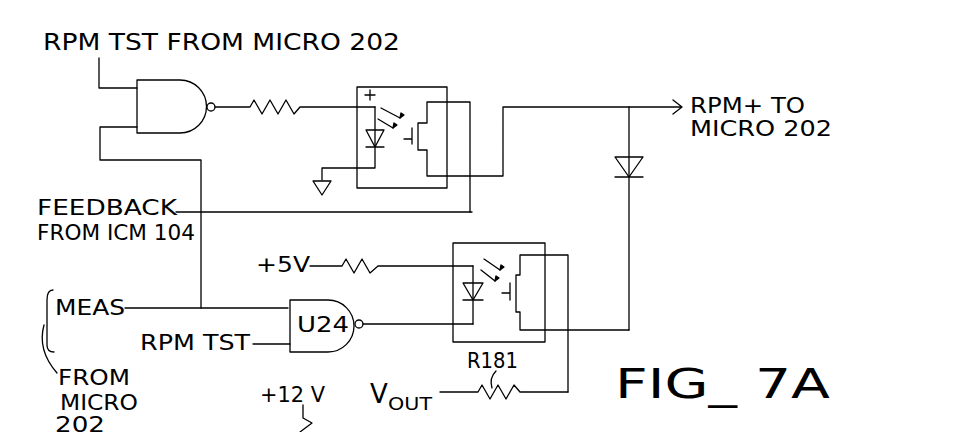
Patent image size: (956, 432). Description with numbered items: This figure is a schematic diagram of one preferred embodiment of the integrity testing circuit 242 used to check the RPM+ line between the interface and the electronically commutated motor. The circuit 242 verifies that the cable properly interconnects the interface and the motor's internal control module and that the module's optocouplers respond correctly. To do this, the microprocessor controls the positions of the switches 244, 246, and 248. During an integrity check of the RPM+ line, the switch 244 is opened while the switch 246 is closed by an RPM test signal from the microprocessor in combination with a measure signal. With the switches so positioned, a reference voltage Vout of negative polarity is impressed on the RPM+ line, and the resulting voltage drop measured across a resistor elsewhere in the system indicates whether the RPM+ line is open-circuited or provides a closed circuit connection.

The integrity testing circuit 242 is at (288, 182).
The switch 244 is at (412, 87).
The switch 246 is at (505, 243).
The switch 248 is at (504, 408).